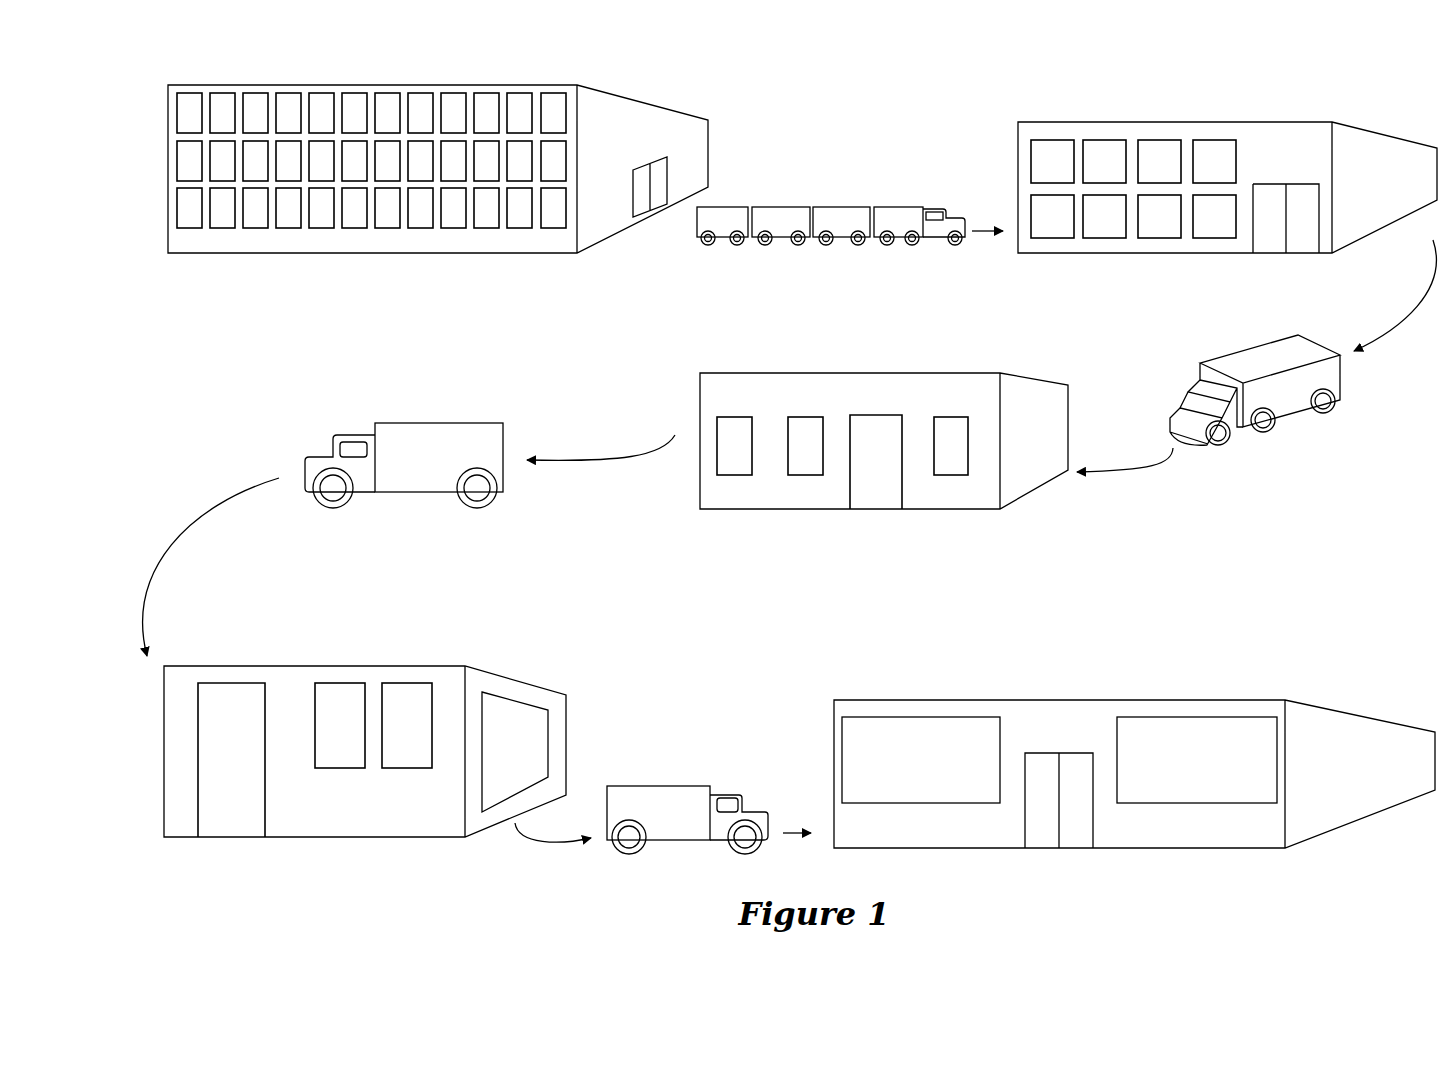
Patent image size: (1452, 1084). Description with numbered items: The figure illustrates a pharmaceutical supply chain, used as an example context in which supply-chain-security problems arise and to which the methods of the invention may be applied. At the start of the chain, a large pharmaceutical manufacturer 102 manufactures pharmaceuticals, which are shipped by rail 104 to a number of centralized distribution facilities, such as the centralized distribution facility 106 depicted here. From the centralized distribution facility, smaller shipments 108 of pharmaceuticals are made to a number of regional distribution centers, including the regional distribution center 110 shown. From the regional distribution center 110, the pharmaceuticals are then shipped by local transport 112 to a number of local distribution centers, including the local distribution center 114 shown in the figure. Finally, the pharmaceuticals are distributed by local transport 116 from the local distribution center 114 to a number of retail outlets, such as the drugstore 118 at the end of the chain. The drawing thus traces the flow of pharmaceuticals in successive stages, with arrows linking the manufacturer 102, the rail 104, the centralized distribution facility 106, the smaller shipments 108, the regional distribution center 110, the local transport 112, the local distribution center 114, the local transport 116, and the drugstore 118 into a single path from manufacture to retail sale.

The pharmaceutical manufacturer 102 is at (333, 253).
The rail 104 is at (837, 190).
The centralized distribution facility 106 is at (1188, 112).
The smaller shipments 108 is at (1282, 437).
The regional distribution center 110 is at (850, 527).
The local transport 112 is at (400, 503).
The local distribution center 114 is at (342, 660).
The local transport 116 is at (668, 778).
The drugstore 118 is at (1078, 687).